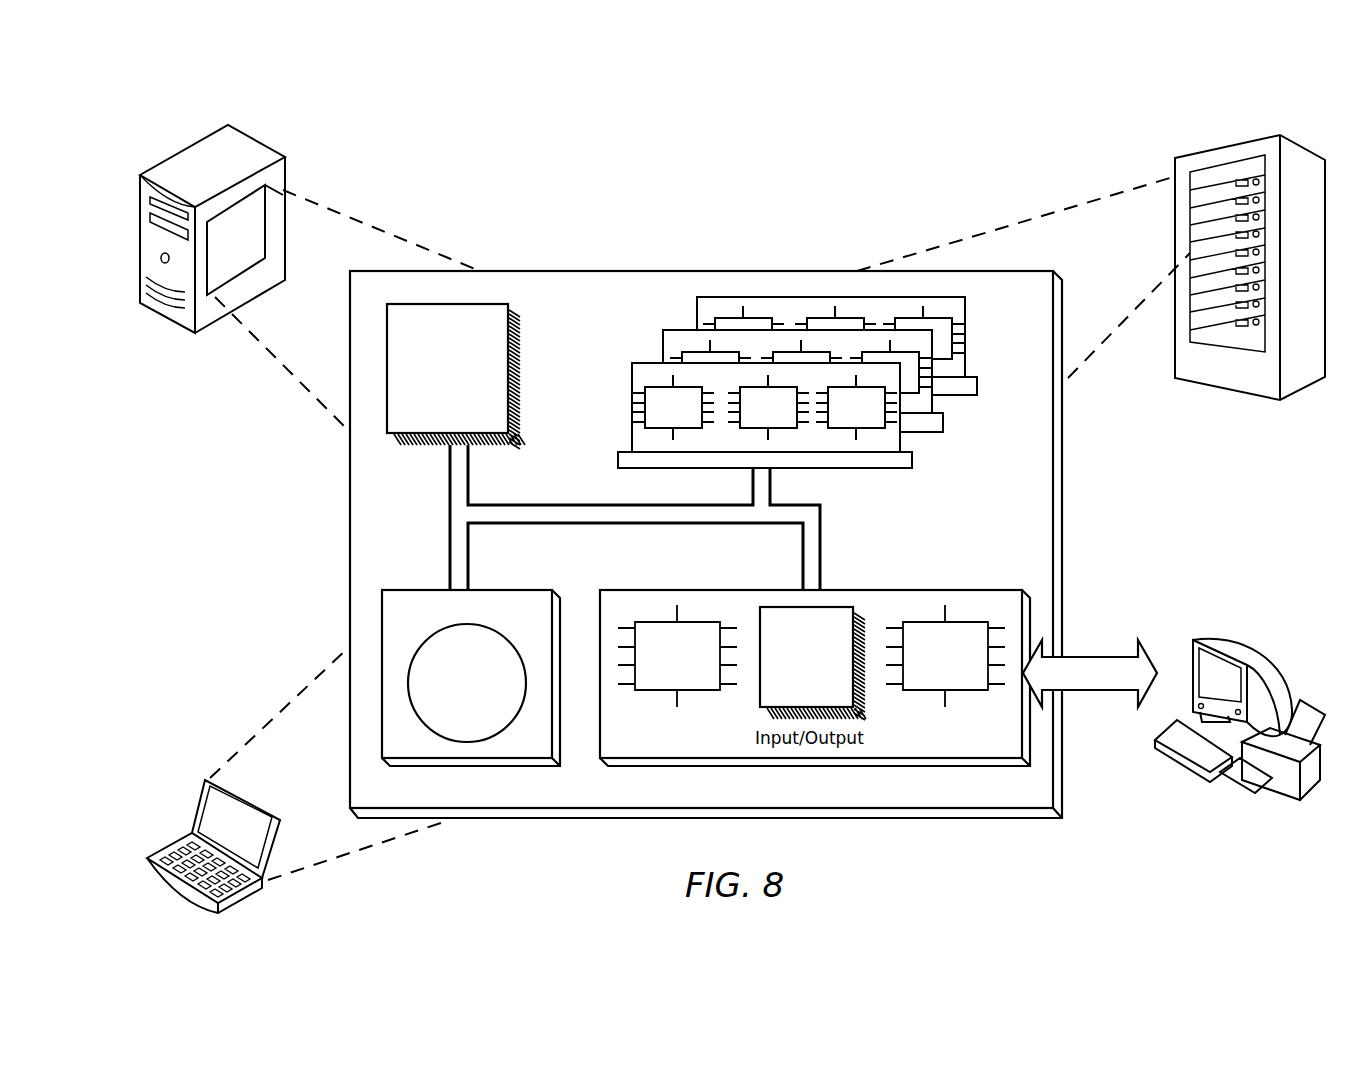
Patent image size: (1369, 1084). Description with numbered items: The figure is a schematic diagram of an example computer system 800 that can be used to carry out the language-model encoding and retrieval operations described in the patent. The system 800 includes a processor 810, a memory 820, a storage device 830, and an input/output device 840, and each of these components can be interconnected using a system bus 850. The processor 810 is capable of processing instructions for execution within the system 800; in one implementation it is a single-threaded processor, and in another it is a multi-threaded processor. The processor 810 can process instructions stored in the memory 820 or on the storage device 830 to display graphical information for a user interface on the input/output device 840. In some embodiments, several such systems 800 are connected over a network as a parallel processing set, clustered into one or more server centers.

The computer system 800 is at (273, 93).
The processor 810 is at (456, 376).
The memory 820 is at (972, 430).
The storage device 830 is at (471, 678).
The input/output device 840 is at (1190, 652).
The system bus 850 is at (635, 523).